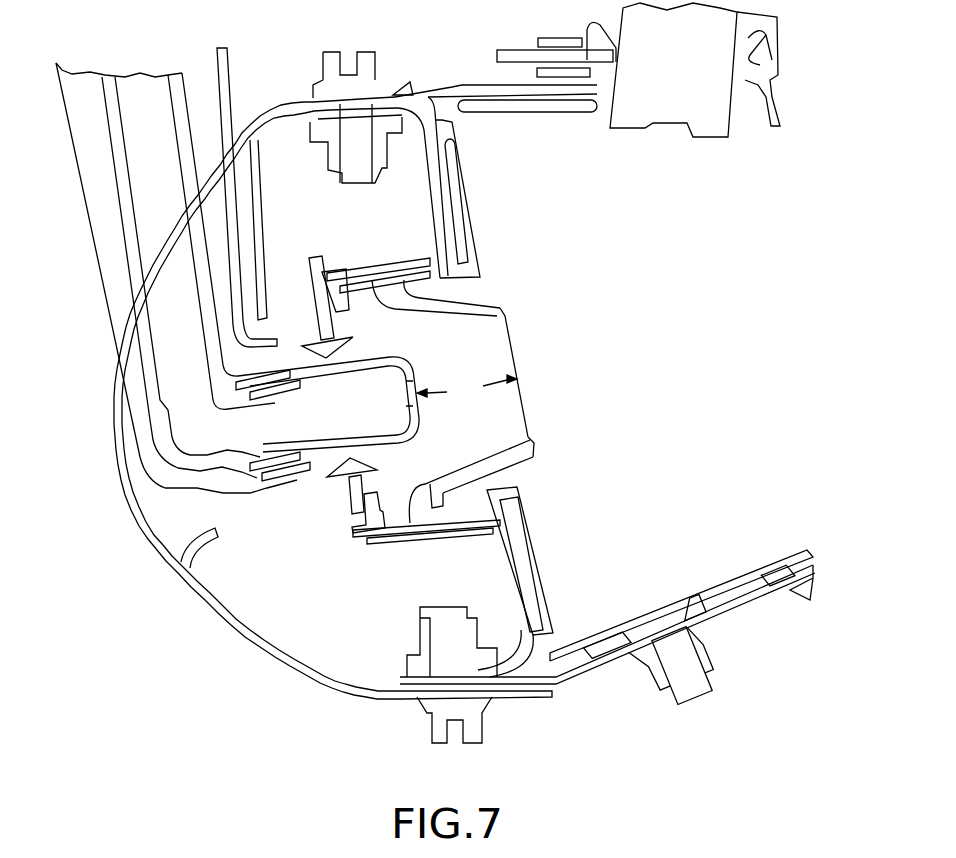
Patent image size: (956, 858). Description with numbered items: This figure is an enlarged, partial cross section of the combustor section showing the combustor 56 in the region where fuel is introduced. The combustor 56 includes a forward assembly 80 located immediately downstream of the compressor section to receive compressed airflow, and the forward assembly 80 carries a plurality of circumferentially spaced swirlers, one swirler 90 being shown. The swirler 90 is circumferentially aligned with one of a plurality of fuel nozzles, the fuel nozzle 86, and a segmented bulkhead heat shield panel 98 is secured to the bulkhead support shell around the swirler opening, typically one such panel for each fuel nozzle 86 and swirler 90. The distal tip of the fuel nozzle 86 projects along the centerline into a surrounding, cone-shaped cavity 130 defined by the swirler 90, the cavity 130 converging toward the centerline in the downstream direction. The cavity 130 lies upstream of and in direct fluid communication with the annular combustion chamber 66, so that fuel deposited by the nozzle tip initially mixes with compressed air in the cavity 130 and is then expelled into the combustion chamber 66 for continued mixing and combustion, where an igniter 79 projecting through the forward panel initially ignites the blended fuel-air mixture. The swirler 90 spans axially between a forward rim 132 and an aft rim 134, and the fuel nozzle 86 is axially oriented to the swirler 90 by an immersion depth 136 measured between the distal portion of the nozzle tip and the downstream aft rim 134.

The combustor 56 is at (153, 637).
The annular combustion chamber 66 is at (669, 310).
The igniter 79 is at (707, 120).
The forward assembly 80 is at (228, 633).
The fuel nozzle 86 is at (283, 481).
The swirler 90 is at (497, 303).
The bulkhead heat shield panel 98 is at (530, 510).
The cavity 130 is at (432, 452).
The forward rim 132 is at (323, 292).
The aft rim 134 is at (535, 442).
The immersion depth 136 is at (467, 389).